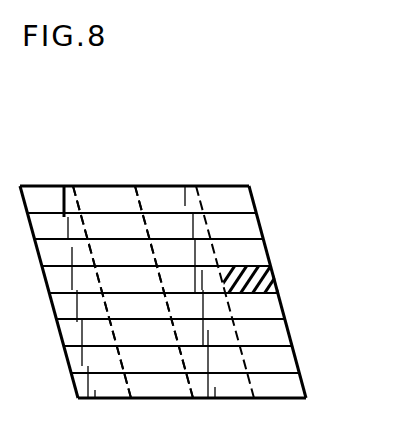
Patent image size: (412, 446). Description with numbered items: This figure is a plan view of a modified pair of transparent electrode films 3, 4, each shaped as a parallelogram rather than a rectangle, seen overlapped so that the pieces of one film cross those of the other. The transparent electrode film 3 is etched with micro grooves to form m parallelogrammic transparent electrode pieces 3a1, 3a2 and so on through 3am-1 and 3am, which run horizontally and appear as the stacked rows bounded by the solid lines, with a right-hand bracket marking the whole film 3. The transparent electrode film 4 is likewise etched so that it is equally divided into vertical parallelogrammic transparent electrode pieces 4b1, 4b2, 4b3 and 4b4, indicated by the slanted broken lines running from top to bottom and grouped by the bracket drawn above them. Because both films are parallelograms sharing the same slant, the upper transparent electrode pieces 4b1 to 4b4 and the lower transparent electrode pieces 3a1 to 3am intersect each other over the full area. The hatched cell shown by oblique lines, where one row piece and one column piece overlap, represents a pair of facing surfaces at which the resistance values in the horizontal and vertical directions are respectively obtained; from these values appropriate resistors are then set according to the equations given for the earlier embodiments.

The transparent electrode film 3 is at (211, 289).
The transparent electrode piece 3a1 is at (250, 203).
The transparent electrode piece 3a2 is at (257, 231).
The transparent electrode piece 3am-1 is at (290, 361).
The transparent electrode piece 3am is at (293, 389).
The transparent electrode film 4 is at (138, 249).
The transparent electrode piece 4b1 is at (220, 200).
The transparent electrode piece 4b2 is at (160, 200).
The transparent electrode piece 4b3 is at (105, 200).
The transparent electrode piece 4b4 is at (52, 202).